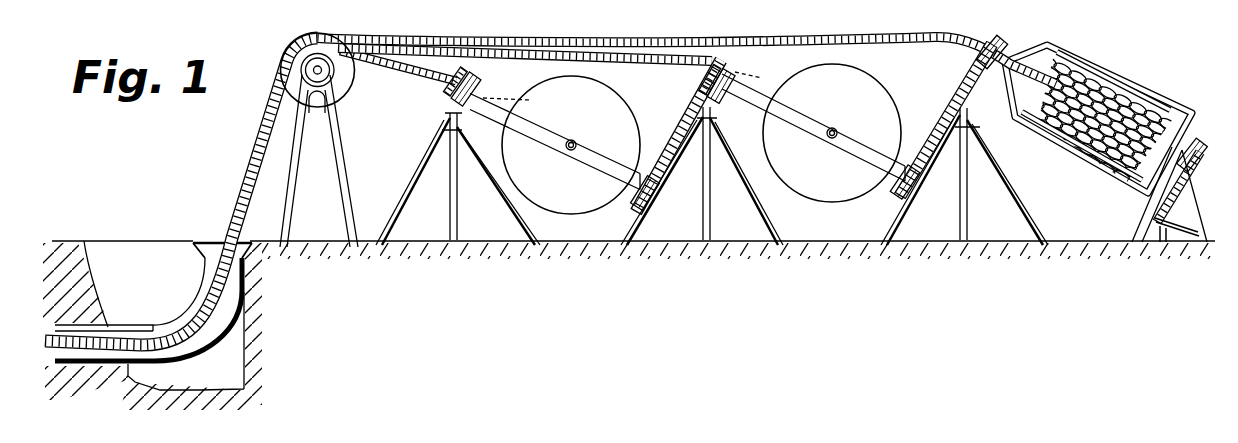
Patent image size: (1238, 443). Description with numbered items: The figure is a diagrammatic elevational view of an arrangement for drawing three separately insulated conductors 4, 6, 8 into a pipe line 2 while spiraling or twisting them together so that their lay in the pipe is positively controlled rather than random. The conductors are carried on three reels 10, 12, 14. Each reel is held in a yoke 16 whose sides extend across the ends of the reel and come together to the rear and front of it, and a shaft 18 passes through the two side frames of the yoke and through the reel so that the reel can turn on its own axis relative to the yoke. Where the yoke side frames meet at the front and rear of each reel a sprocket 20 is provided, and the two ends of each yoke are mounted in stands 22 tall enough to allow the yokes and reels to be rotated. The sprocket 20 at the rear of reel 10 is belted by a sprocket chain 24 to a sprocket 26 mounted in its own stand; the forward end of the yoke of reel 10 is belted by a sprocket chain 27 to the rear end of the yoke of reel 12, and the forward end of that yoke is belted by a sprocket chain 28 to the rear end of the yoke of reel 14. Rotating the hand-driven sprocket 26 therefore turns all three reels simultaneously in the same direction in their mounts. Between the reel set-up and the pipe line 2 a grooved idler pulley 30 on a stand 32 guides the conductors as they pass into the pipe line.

The pipe line 2 is at (84, 364).
The conductor 4 is at (881, 37).
The conductor 6 is at (656, 61).
The conductor 8 is at (422, 72).
The reel 10 is at (1103, 78).
The reel 12 is at (884, 91).
The reel 14 is at (597, 92).
The yoke 16 is at (543, 127).
The shaft 18 is at (577, 141).
The sprocket 20 is at (470, 75).
The stand 22 is at (431, 159).
The sprocket chain 24 is at (1187, 186).
The sprocket 26 is at (1153, 236).
The sprocket chain 27 is at (930, 128).
The sprocket chain 28 is at (672, 135).
The grooved idler pulley 30 is at (350, 86).
The stand 32 is at (343, 163).